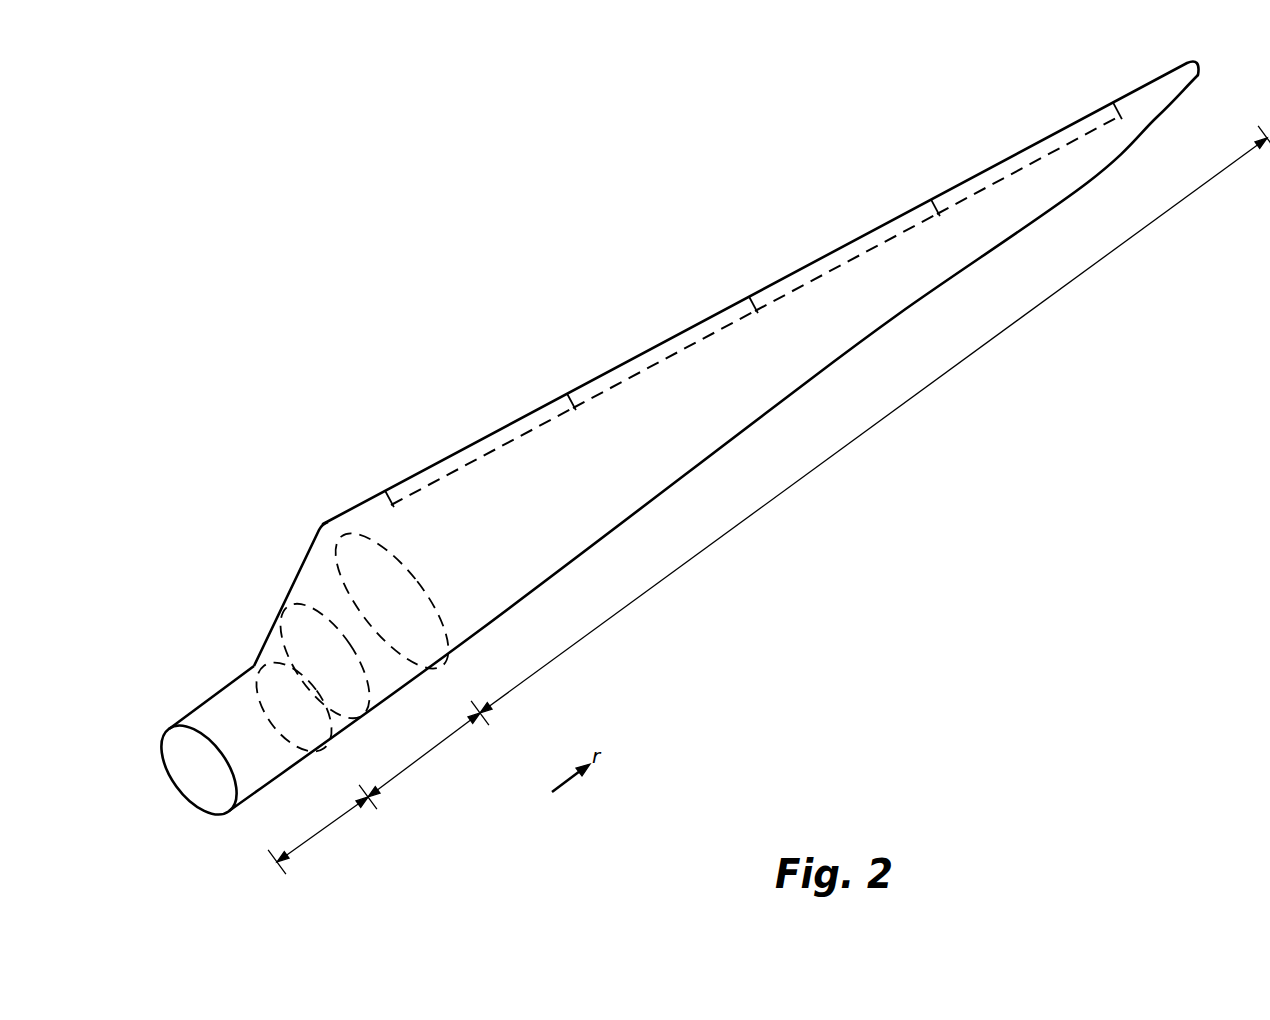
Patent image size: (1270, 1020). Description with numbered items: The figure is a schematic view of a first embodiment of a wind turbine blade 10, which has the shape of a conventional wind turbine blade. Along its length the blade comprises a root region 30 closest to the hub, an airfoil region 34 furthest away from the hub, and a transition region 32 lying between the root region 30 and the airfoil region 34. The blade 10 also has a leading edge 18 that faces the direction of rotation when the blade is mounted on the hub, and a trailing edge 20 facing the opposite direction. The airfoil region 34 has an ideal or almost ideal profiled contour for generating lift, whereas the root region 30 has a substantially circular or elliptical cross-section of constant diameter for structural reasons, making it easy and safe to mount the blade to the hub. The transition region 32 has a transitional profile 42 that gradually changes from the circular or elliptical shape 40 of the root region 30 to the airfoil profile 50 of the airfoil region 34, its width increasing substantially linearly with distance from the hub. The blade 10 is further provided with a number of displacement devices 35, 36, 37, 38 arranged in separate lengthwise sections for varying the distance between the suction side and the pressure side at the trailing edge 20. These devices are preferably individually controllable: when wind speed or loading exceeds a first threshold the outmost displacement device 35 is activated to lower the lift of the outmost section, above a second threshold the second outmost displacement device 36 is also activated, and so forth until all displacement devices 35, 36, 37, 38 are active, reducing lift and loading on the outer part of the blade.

The wind turbine blade 10 is at (672, 445).
The leading edge 18 is at (883, 327).
The trailing edge 20 is at (893, 215).
The root region 30 is at (327, 825).
The transition region 32 is at (430, 752).
The airfoil region 34 is at (795, 485).
The outmost displacement device 35 is at (1032, 148).
The second outmost displacement device 36 is at (808, 272).
The displacement device 37 is at (640, 358).
The displacement device 38 is at (490, 443).
The circular or elliptical shape 40 is at (240, 693).
The transitional profile 42 is at (305, 603).
The airfoil profile 50 is at (346, 537).